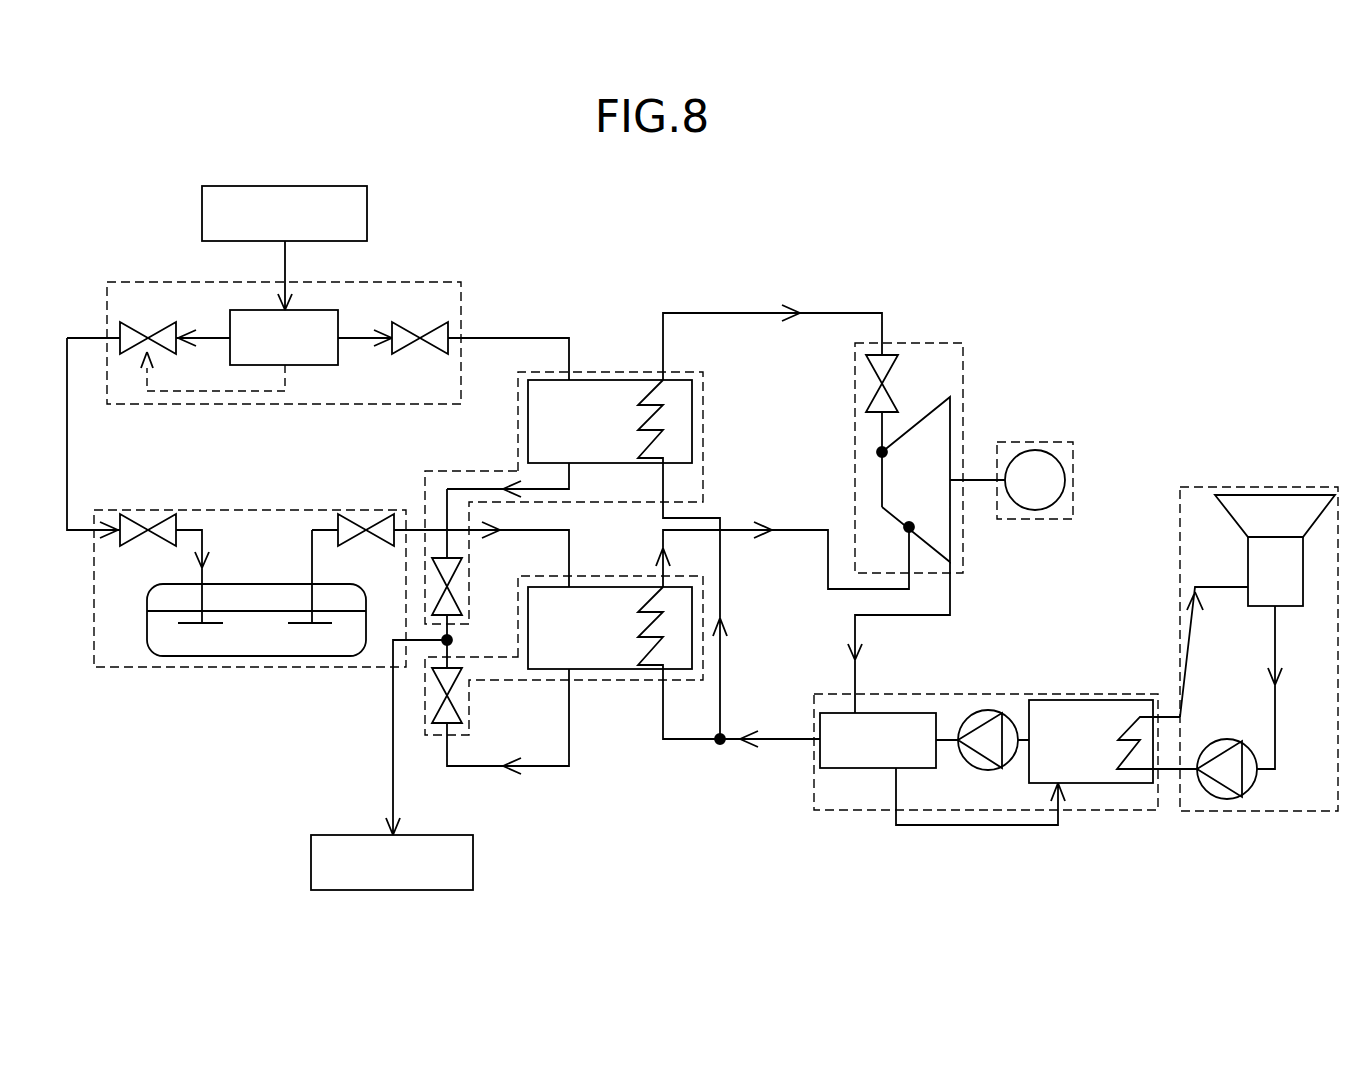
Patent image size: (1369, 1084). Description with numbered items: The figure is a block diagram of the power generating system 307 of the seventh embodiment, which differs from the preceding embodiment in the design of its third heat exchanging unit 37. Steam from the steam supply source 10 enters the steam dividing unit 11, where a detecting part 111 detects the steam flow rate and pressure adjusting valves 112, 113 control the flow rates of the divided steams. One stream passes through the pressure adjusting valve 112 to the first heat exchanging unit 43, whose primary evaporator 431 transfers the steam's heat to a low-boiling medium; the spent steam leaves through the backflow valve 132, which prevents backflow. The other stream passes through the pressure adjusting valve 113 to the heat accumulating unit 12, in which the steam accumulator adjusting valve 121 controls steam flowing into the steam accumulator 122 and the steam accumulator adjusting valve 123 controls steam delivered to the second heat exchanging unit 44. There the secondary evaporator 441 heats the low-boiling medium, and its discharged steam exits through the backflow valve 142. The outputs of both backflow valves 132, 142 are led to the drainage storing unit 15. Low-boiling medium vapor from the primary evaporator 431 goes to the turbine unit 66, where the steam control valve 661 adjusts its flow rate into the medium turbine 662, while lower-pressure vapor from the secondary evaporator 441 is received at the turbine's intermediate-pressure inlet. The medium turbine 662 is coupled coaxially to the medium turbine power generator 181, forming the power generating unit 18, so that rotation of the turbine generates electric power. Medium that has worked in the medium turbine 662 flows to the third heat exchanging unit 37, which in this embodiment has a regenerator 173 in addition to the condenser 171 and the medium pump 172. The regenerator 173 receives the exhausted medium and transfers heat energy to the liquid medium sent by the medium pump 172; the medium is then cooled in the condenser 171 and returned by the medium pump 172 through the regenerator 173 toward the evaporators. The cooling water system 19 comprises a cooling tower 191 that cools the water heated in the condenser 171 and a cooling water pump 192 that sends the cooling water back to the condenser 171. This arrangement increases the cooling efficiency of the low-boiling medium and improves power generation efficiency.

The steam supply source 10 is at (367, 212).
The steam dividing unit 11 is at (488, 268).
The detecting part 111 is at (340, 322).
The pressure adjusting valve 112 is at (448, 326).
The pressure adjusting valve 113 is at (130, 325).
The heat accumulating unit 12 is at (60, 695).
The steam accumulator adjusting valve 121 is at (170, 510).
The steam accumulator 122 is at (288, 656).
The steam accumulator adjusting valve 123 is at (340, 510).
The backflow valve 132 is at (463, 560).
The backflow valve 142 is at (463, 720).
The drainage storing unit 15 is at (473, 862).
The first heat exchanging unit 43 is at (596, 363).
The primary evaporator 431 is at (625, 466).
The second heat exchanging unit 44 is at (603, 573).
The secondary evaporator 441 is at (640, 671).
The turbine unit 66 is at (926, 335).
The steam control valve 661 is at (866, 413).
The medium turbine 662 is at (880, 508).
The power generating unit 18 is at (1078, 465).
The medium turbine power generator 181 is at (1032, 450).
The third heat exchanging unit 37 is at (1026, 685).
The condenser 171 is at (1113, 699).
The medium pump 172 is at (984, 710).
The regenerator 173 is at (897, 712).
The cooling water system 19 is at (1303, 480).
The cooling tower 191 is at (1248, 555).
The cooling water pump 192 is at (1228, 739).
The power generating system 307 is at (725, 865).